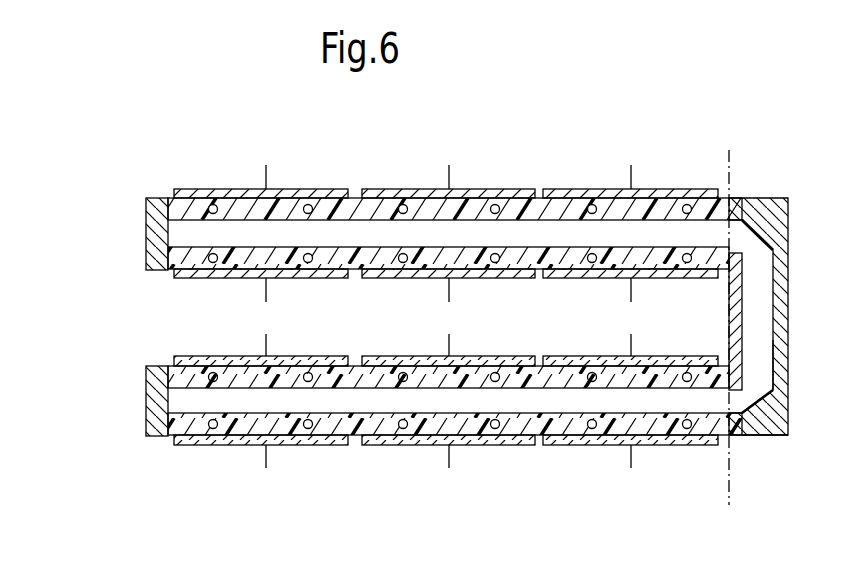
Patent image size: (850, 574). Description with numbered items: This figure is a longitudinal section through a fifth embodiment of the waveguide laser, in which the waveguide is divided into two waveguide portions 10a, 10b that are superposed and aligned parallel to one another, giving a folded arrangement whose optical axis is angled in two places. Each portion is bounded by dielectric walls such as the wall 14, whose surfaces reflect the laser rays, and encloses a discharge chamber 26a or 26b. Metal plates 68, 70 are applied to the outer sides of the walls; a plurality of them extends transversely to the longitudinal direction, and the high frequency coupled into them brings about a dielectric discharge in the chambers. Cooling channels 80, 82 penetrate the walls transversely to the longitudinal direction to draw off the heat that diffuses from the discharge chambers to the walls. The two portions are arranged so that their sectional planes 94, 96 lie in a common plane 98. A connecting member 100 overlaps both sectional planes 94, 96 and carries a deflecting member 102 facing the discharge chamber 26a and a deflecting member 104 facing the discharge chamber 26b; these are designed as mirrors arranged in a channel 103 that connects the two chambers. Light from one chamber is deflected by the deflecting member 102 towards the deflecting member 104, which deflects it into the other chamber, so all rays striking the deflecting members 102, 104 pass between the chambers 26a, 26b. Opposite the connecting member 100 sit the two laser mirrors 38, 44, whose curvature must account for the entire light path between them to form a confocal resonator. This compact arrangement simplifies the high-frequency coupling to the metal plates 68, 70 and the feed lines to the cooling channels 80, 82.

The waveguide portion 10a is at (423, 257).
The waveguide portion 10b is at (419, 446).
The wall 14 is at (338, 447).
The discharge chamber 26a is at (635, 235).
The discharge chamber 26b is at (590, 440).
The laser mirror 38 is at (142, 198).
The laser mirror 44 is at (146, 420).
The metal plate 68 is at (220, 356).
The metal plate 70 is at (446, 320).
The cooling channel 80 is at (496, 263).
The cooling channel 82 is at (495, 204).
The sectional plane 94 is at (738, 198).
The sectional plane 96 is at (744, 438).
The common plane 98 is at (727, 486).
The connecting member 100 is at (785, 323).
The deflecting member 102 is at (766, 222).
The channel 103 is at (778, 370).
The deflecting member 104 is at (768, 424).